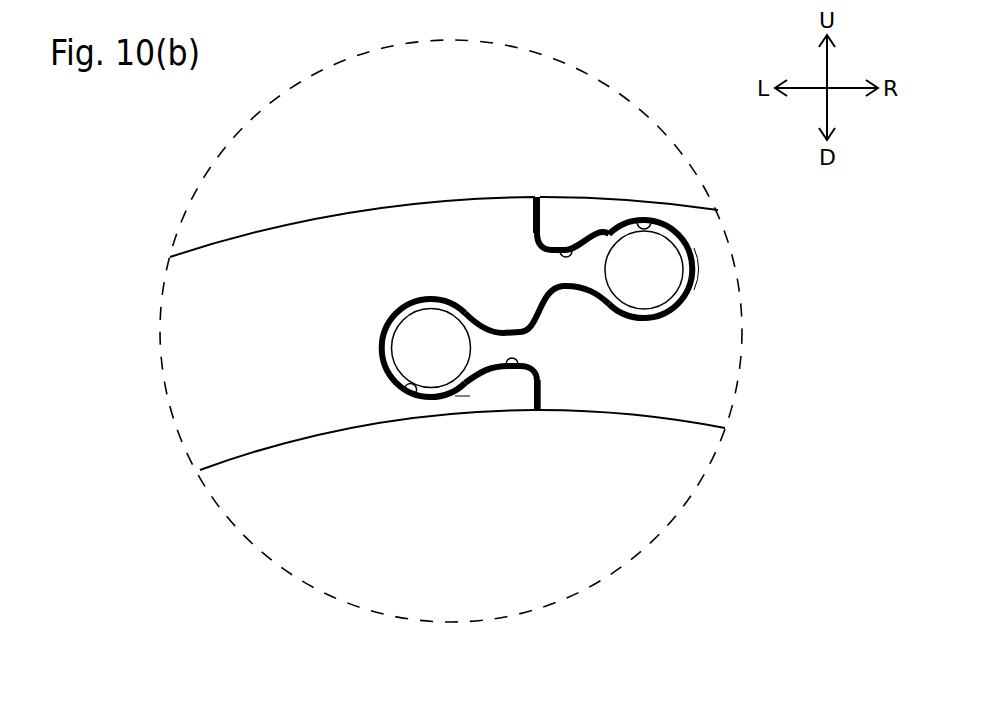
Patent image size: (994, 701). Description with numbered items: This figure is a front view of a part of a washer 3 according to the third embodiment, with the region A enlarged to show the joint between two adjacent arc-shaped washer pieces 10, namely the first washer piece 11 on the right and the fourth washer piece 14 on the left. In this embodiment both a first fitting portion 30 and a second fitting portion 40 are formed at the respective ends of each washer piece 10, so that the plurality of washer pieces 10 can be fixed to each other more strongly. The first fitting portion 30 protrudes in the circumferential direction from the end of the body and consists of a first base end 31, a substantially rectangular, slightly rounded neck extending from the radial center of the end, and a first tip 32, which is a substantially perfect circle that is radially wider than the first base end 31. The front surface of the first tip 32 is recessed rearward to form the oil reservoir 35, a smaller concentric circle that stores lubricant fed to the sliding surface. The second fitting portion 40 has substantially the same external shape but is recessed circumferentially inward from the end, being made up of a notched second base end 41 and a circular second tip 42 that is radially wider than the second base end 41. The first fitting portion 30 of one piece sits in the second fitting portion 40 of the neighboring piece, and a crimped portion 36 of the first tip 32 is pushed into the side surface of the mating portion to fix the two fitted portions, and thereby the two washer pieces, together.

The enlarged region A is at (292, 68).
The washer 3 is at (71, 149).
The washer piece 10 is at (442, 288).
The first washer piece 11 is at (663, 177).
The fourth washer piece 14 is at (222, 207).
The first fitting portion 30 is at (541, 313).
The first base end 31 is at (497, 332).
The first tip 32 is at (403, 312).
The oil reservoir 35 is at (433, 309).
The crimped portion 36 is at (698, 262).
The second fitting portion 40 is at (548, 247).
The second base end 41 is at (566, 250).
The second tip 42 is at (636, 222).